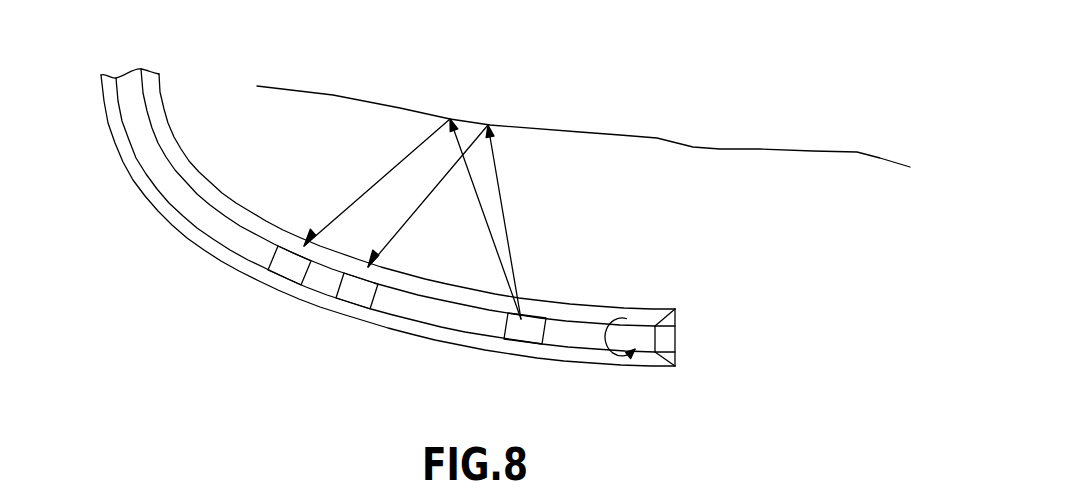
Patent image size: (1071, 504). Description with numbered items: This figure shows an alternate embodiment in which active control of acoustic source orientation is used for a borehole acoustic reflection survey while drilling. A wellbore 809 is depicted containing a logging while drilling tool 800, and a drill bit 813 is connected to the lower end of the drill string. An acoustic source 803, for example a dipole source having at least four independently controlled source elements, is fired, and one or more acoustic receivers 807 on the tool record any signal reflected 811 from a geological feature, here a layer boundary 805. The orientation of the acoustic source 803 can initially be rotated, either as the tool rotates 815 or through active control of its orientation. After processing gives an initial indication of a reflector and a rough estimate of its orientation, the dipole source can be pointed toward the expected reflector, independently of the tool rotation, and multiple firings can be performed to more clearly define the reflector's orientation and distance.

The logging while drilling tool 800 is at (166, 199).
The acoustic source 803 is at (520, 357).
The layer boundary 805 is at (762, 147).
The acoustic receivers 807 is at (343, 300).
The wellbore 809 is at (102, 86).
The reflected signal 811 is at (659, 251).
The drill bit 813 is at (677, 328).
The tool rotation 815 is at (640, 352).